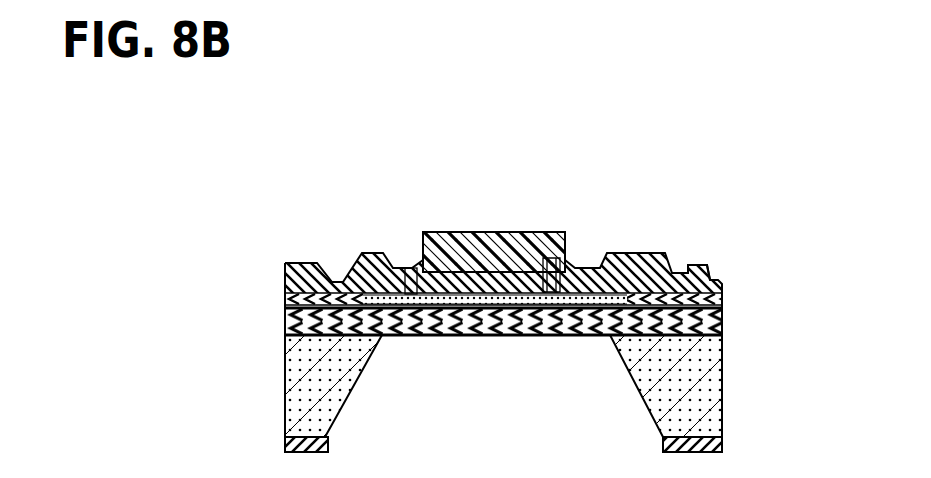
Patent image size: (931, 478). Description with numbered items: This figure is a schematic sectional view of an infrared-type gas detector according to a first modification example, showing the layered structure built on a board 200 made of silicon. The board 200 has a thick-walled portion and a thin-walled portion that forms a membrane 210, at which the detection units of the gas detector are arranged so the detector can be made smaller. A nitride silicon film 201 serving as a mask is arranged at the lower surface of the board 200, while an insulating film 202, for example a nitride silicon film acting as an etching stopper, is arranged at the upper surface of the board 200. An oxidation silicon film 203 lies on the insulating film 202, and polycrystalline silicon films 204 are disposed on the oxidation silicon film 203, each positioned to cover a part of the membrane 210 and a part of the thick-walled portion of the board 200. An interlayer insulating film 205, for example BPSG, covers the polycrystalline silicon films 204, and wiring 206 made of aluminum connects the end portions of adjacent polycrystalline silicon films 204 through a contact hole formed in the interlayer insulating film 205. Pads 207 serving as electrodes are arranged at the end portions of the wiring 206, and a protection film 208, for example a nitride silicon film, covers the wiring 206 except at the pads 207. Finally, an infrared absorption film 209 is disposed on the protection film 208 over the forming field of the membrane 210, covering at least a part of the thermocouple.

The board 200 is at (722, 395).
The nitride silicon film 201 is at (722, 445).
The insulating film 202 is at (722, 331).
The oxidation silicon film 203 is at (285, 307).
The polycrystalline silicon film 204 is at (412, 266).
The interlayer insulating film 205 is at (722, 297).
The wiring 206 is at (550, 260).
The pad 207 is at (688, 270).
The protection film 208 is at (710, 270).
The infrared absorption film 209 is at (496, 242).
The membrane 210 is at (537, 352).